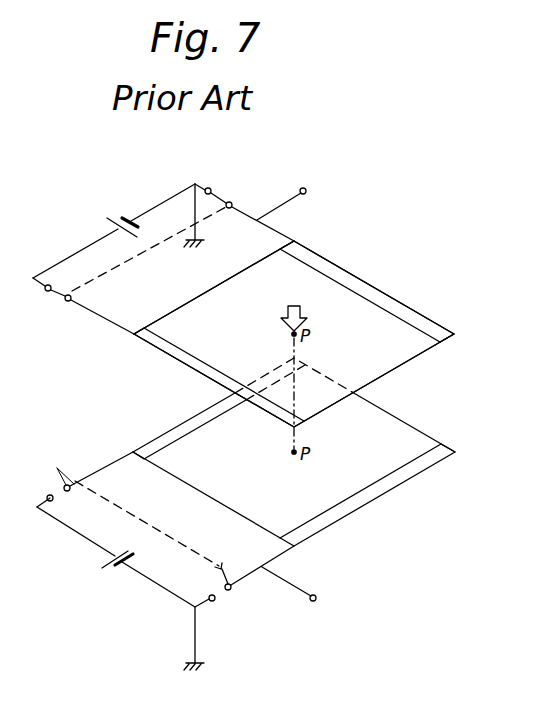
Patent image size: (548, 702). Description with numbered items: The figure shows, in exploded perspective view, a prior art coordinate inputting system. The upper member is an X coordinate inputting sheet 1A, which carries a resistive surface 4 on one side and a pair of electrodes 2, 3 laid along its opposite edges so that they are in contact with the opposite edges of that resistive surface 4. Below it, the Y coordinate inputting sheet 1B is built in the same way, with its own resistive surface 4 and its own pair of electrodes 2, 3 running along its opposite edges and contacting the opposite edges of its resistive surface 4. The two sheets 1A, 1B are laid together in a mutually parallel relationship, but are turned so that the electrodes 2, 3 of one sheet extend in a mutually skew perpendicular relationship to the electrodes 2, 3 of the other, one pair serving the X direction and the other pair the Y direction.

The X coordinate inputting sheet 1A is at (407, 364).
The Y coordinate inputting sheet 1B is at (366, 506).
The electrode 2 is at (167, 352).
The electrode 3 is at (350, 283).
The resistive surface 4 is at (373, 320).